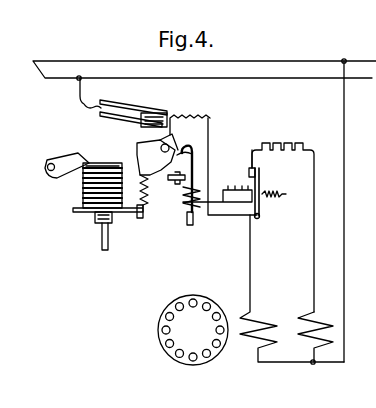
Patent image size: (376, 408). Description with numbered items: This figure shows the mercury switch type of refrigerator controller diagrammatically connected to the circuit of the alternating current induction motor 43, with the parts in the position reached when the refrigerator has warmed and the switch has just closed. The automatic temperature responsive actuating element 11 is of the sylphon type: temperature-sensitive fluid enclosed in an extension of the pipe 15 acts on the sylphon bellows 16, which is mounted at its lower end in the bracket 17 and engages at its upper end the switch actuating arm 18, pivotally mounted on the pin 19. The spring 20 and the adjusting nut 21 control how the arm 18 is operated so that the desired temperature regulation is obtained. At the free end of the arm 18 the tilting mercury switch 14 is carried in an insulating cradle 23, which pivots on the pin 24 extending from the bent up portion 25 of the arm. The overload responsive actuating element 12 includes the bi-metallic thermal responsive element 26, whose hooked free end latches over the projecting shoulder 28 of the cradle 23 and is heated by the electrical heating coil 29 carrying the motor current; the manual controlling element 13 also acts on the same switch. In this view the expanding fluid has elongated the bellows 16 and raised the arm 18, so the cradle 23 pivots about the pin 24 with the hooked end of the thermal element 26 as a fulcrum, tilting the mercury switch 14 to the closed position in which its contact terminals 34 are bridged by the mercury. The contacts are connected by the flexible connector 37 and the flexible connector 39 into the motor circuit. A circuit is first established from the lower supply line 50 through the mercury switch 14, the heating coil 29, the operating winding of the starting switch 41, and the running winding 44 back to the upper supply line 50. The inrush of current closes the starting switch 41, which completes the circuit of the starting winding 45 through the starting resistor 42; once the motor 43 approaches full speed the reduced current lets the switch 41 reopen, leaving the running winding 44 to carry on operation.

The temperature responsive actuating element 11 is at (96, 222).
The overload responsive actuating element 12 is at (195, 152).
The manual controlling element 13 is at (173, 185).
The tilting mercury switch 14 is at (137, 106).
The pipe 15 is at (103, 248).
The sylphon bellows 16 is at (83, 198).
The bracket 17 is at (73, 211).
The switch actuating arm 18 is at (97, 162).
The pin 19 is at (50, 162).
The spring 20 is at (146, 212).
The adjusting nut 21 is at (140, 222).
The cradle 23 is at (190, 126).
The pin 24 is at (157, 143).
The bent up portion 25 is at (150, 150).
The bi-metallic thermal responsive element 26 is at (195, 214).
The projecting shoulder 28 is at (193, 162).
The electrical heating coil 29 is at (190, 198).
The contact terminals 34 is at (163, 110).
The flexible connector 37 is at (82, 110).
The flexible connector 39 is at (195, 116).
The starting switch 41 is at (259, 185).
The starting resistor 42 is at (281, 142).
The alternating current induction motor 43 is at (193, 330).
The running winding 44 is at (273, 311).
The starting winding 45 is at (325, 312).
The supply line 50 is at (195, 208).